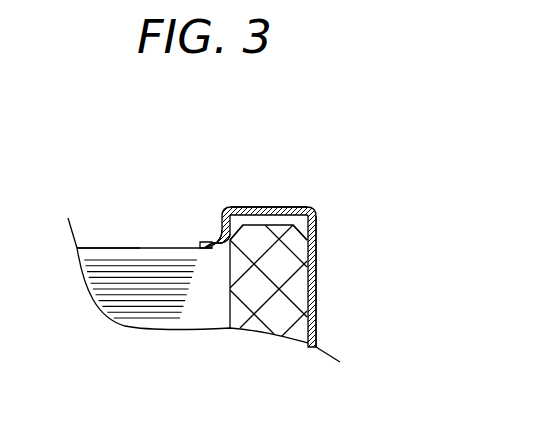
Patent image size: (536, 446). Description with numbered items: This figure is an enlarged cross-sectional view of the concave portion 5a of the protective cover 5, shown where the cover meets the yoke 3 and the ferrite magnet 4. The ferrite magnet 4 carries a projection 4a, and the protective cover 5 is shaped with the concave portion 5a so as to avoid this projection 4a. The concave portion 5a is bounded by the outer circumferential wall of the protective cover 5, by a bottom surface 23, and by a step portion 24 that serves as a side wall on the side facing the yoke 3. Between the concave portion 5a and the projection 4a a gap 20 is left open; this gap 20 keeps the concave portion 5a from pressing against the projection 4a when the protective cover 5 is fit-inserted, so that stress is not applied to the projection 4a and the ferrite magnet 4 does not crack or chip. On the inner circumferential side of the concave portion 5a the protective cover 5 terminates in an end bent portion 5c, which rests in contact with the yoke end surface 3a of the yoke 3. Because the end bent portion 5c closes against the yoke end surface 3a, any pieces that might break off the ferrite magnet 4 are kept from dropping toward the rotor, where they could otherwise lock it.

The yoke 3 is at (205, 315).
The yoke end surface 3a is at (138, 248).
The ferrite magnet 4 is at (275, 318).
The projection 4a is at (297, 238).
The protective cover 5 is at (315, 323).
The concave portion 5a is at (247, 212).
The end bent portion 5c is at (203, 241).
The gap 20 is at (282, 222).
The bottom surface 23 is at (242, 247).
The step portion 24 is at (222, 218).